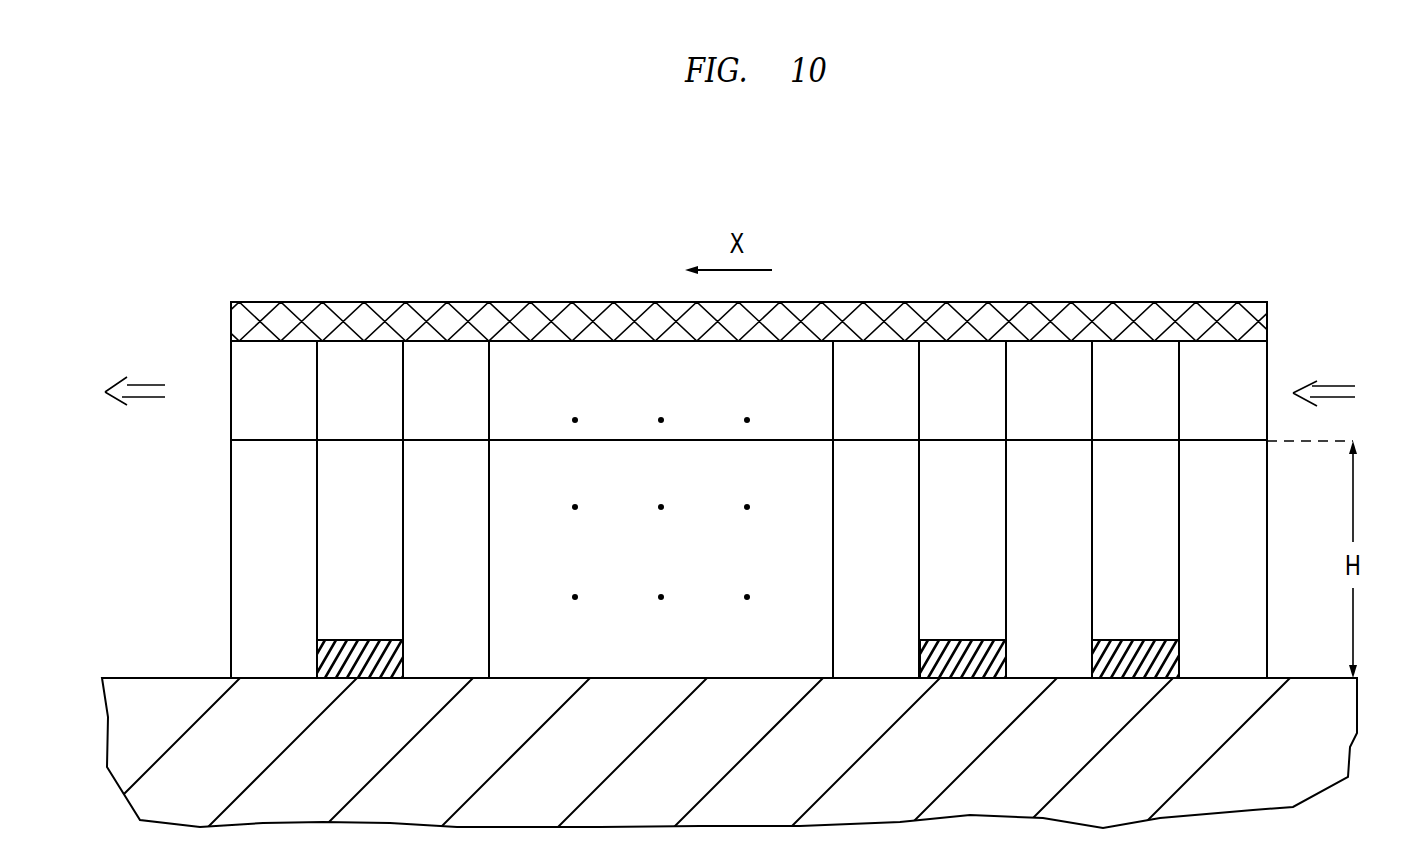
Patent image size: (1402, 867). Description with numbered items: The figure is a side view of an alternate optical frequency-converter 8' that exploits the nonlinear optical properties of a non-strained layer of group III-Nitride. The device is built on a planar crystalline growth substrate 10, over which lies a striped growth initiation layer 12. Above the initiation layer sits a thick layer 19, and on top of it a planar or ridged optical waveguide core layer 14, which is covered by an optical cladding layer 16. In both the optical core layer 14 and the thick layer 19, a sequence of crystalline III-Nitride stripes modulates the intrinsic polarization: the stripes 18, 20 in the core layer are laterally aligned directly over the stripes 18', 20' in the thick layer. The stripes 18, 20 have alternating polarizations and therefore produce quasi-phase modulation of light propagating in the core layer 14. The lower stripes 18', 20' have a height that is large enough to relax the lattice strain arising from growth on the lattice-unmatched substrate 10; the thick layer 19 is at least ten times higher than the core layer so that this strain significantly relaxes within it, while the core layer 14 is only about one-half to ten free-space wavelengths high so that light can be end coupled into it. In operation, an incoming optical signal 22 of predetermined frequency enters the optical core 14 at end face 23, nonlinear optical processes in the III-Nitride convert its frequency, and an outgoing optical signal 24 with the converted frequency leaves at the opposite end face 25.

The optical frequency-converter 8' is at (1280, 132).
The planar crystalline growth substrate 10 is at (550, 779).
The striped growth initiation layer 12 is at (1106, 678).
The optical waveguide core layer 14 is at (205, 442).
The optical cladding layer 16 is at (921, 303).
The stripes of crystalline III-Nitride in the optical core layer 18 is at (748, 390).
The stripes of crystalline III-Nitride in the thick layer 18' is at (748, 559).
The thick layer 19 is at (205, 445).
The stripes of crystalline III-Nitride in the optical core layer 20 is at (749, 390).
The stripes of crystalline III-Nitride in the thick layer 20' is at (749, 559).
The incoming optical signal 22 is at (1375, 412).
The end face 23 is at (1267, 347).
The outgoing optical signal 24 is at (65, 408).
The end face 25 is at (231, 350).